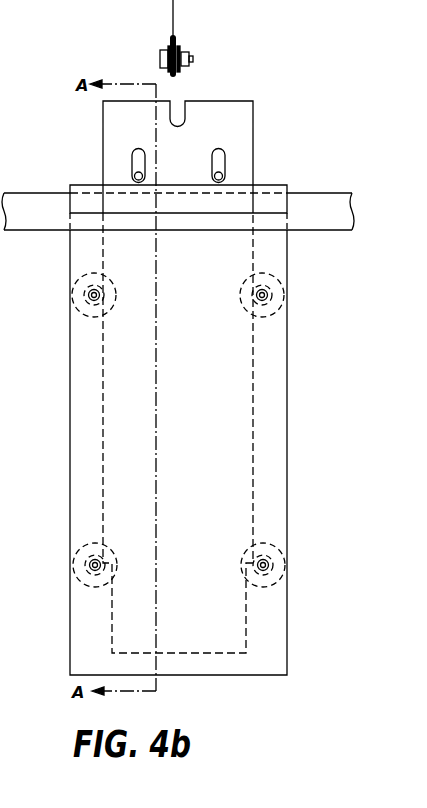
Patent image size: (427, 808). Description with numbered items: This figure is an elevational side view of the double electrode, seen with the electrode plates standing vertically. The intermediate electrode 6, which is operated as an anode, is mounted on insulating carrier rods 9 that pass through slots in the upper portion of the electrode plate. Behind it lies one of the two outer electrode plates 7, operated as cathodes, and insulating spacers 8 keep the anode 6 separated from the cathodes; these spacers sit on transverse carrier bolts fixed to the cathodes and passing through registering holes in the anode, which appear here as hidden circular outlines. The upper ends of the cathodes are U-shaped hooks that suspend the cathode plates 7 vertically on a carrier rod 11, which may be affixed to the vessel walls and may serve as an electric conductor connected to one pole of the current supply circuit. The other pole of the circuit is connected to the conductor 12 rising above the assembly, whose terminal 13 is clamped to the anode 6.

The intermediate electrode 6 is at (237, 113).
The outer electrode plate 7 is at (76, 432).
The insulating spacer 8 is at (90, 307).
The insulating carrier rod 9 is at (136, 173).
The carrier rod 11 is at (310, 208).
The conductor 12 is at (177, 38).
The terminal 13 is at (194, 58).